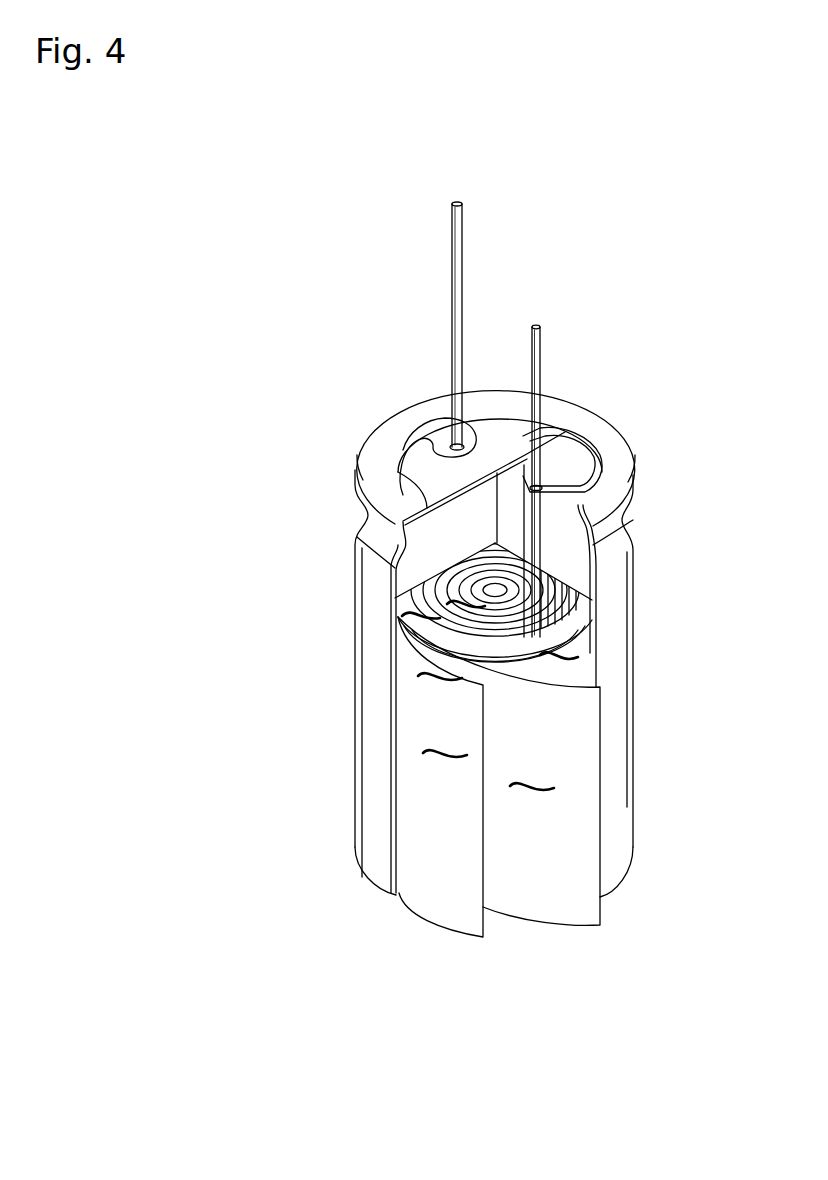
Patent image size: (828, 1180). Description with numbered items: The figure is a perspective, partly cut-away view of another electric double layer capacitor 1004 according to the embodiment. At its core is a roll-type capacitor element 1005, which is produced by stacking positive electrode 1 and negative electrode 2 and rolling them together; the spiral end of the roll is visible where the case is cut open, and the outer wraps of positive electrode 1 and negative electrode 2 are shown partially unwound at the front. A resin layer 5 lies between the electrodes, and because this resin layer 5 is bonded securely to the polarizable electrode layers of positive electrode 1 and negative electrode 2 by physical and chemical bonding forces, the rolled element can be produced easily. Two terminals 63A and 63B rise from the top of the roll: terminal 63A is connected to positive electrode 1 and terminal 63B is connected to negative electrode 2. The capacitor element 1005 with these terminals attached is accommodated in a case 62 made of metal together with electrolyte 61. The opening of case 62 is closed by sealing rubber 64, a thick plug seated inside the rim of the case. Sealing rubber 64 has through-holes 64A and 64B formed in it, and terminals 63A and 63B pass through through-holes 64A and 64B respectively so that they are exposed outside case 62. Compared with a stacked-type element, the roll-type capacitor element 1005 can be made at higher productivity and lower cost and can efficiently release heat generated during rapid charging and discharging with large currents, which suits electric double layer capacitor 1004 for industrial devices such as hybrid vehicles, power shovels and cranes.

The positive electrode 1 is at (448, 862).
The negative electrode 2 is at (588, 870).
The resin layer 5 is at (570, 820).
The electrolyte 61 is at (537, 785).
The case 62 is at (375, 717).
The terminal 63A is at (460, 265).
The terminal 63B is at (541, 368).
The sealing rubber 64 is at (473, 510).
The through-hole 64A is at (442, 447).
The through-hole 64B is at (538, 533).
The electric double layer capacitor 1004 is at (592, 246).
The roll-type capacitor element 1005 is at (437, 604).